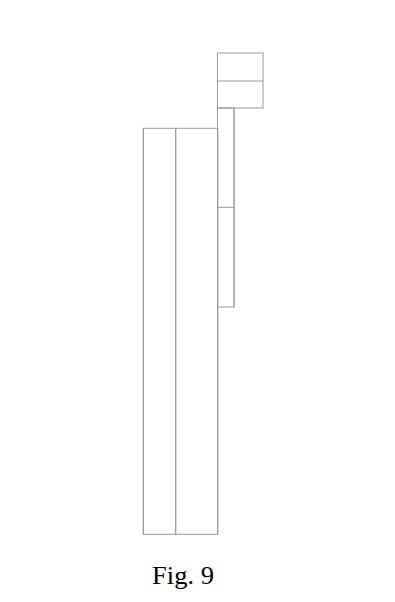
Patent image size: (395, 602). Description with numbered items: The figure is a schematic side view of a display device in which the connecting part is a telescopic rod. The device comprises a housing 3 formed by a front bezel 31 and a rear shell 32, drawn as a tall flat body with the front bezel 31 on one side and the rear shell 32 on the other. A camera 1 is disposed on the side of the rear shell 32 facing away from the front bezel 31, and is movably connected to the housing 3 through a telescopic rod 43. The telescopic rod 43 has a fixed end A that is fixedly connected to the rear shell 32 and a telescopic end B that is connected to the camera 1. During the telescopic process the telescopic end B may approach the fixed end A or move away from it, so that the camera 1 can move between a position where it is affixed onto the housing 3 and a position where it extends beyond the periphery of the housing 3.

The camera 1 is at (260, 56).
The housing 3 is at (35, 241).
The front bezel 31 is at (124, 331).
The rear shell 32 is at (145, 331).
The telescopic rod 43 is at (267, 207).
The fixed end A is at (266, 225).
The telescopic end B is at (263, 150).